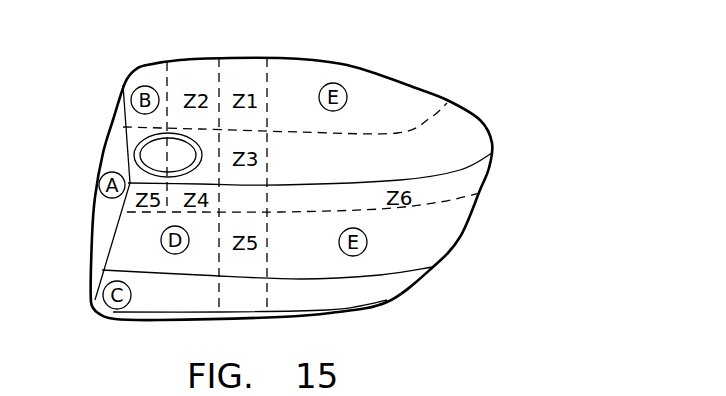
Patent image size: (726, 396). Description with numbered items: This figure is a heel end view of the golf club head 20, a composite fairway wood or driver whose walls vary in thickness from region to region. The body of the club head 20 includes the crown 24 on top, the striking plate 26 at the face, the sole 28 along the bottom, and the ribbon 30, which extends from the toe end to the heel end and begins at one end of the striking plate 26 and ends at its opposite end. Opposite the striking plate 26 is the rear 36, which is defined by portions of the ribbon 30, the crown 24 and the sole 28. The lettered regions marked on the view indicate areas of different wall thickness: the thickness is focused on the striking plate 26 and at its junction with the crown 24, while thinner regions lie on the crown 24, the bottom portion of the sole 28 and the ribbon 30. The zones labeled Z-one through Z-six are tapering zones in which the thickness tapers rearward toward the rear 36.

The golf club head 20 is at (473, 77).
The crown 24 is at (345, 63).
The striking plate 26 is at (115, 145).
The sole 28 is at (390, 302).
The ribbon 30 is at (452, 230).
The rear 36 is at (510, 147).